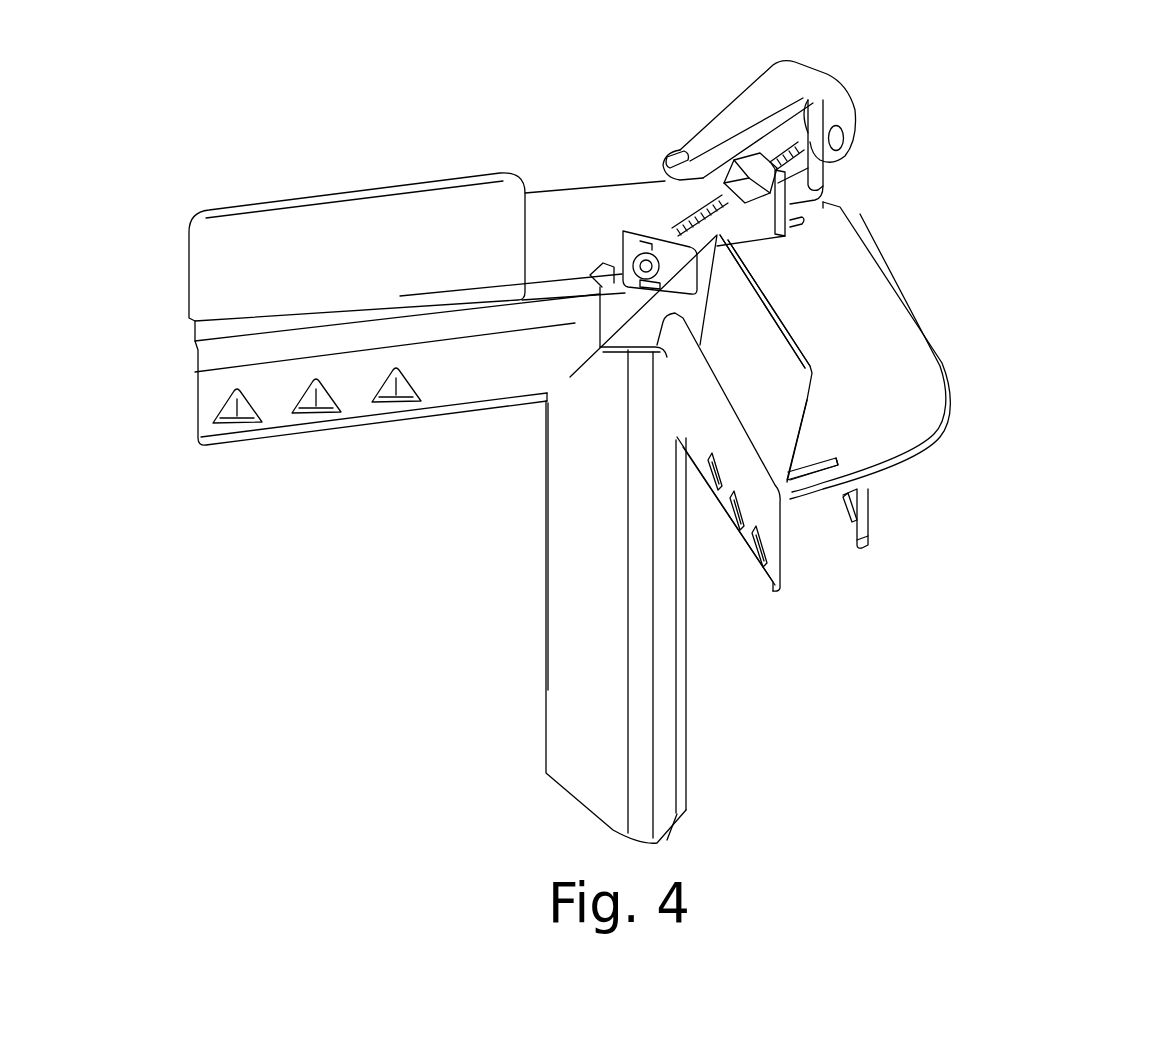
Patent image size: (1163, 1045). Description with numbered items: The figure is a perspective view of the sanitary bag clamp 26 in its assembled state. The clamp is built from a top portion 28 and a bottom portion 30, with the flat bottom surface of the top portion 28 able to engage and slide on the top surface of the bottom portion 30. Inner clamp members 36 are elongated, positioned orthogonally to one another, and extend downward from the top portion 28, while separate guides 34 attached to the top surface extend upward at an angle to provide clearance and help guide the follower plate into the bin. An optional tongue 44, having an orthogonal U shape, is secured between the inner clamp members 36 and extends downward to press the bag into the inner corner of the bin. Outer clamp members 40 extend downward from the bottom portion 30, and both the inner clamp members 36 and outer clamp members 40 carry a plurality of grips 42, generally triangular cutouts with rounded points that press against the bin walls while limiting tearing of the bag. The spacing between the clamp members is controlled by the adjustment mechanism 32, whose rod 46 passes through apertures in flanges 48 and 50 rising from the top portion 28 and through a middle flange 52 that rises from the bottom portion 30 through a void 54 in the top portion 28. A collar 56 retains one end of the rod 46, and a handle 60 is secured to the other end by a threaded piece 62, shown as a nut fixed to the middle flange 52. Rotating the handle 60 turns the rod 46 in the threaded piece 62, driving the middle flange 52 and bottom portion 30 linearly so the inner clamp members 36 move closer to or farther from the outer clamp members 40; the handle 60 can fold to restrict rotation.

The bag clamp 26 is at (1052, 104).
The top portion 28 is at (580, 251).
The bottom portion 30 is at (923, 323).
The adjustment mechanism 32 is at (767, 202).
The guides 34 is at (323, 263).
The inner clamp members 36 is at (457, 375).
The outer clamp members 40 is at (866, 508).
The grips 42 is at (394, 402).
The tongue 44 is at (574, 614).
The rod 46 is at (683, 217).
The flange 48 is at (630, 237).
The flange 50 is at (808, 163).
The middle flange 52 is at (770, 217).
The void 54 is at (753, 248).
The collar 56 is at (634, 268).
The handle 60 is at (837, 78).
The threaded piece 62 is at (760, 188).